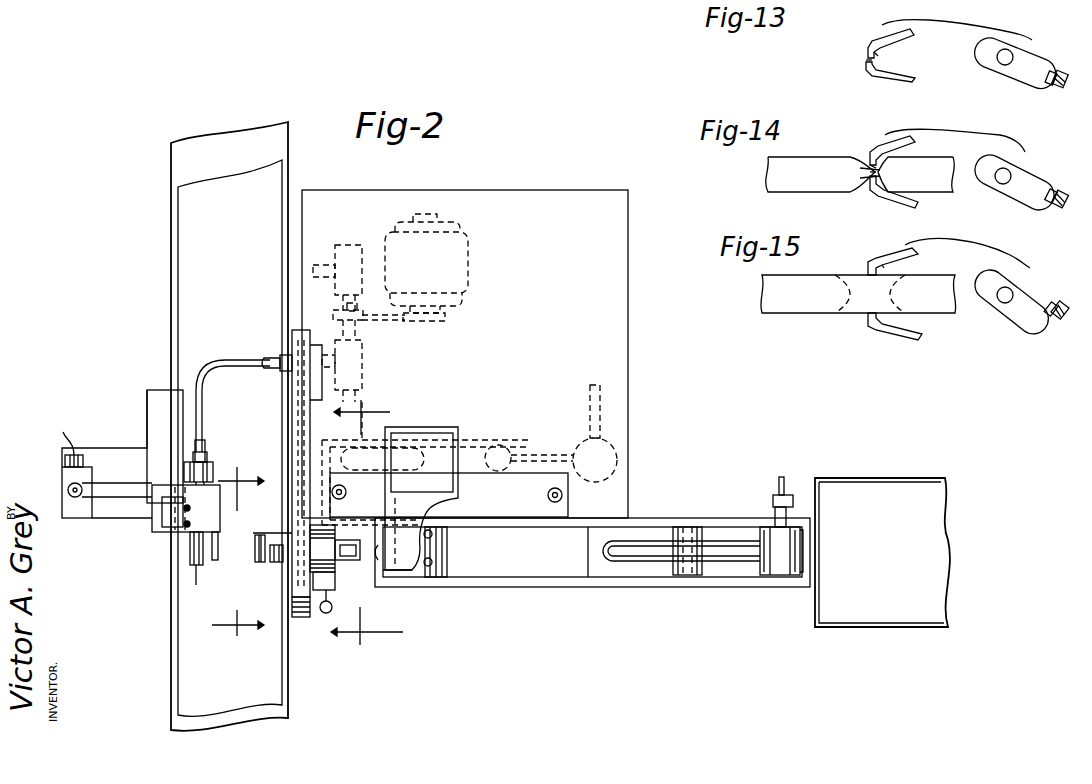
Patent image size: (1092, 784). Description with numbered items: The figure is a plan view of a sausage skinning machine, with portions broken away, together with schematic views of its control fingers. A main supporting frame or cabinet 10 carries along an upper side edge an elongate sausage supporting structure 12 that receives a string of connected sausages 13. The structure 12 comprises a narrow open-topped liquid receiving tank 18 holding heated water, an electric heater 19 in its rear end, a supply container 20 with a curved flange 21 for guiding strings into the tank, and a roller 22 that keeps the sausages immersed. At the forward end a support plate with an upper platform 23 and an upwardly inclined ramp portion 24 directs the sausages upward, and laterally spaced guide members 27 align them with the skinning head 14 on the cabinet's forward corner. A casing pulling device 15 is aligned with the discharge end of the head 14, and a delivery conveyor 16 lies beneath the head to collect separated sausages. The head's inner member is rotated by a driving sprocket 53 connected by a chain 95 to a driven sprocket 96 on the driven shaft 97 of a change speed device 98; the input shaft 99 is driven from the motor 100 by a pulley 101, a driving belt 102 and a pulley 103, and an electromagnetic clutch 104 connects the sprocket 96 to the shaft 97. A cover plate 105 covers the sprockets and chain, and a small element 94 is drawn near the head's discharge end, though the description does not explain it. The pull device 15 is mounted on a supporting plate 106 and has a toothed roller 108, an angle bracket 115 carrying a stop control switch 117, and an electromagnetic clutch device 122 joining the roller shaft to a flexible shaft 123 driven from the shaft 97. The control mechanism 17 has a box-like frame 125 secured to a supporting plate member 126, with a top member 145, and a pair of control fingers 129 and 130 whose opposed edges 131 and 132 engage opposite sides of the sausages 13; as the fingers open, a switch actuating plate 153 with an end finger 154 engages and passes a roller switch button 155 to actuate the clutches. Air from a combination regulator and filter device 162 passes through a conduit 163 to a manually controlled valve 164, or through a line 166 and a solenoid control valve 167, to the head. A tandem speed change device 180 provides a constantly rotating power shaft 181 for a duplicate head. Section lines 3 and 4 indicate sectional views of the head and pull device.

In FIG. 2, the main supporting frame or cabinet 10 is at (622, 316).
In FIG. 2, the sausage supporting structure 12 is at (618, 588).
In FIG. 14, the sausages 13 is at (765, 180).
In FIG. 15, the sausages 13 is at (772, 312).
In FIG. 2, the sausage skinning device or head 14 is at (335, 572).
In FIG. 2, the casing pulling or feeding device 15 is at (160, 532).
In FIG. 2, the delivery conveyor 16 is at (180, 250).
In FIG. 2, the control mechanism 17 is at (405, 427).
In FIG. 2, the liquid receiving tank 18 is at (718, 578).
In FIG. 2, the electric heater 19 is at (762, 540).
In FIG. 2, the supply container 20 is at (845, 618).
In FIG. 2, the curved flange 21 is at (776, 570).
In FIG. 2, the roller 22 is at (690, 527).
In FIG. 2, the upper platform 23 is at (420, 578).
In FIG. 2, the upwardly inclined ramp portion 24 is at (525, 583).
In FIG. 2, the guide members 27 is at (432, 560).
In FIG. 2, the driving sprocket 53 is at (296, 582).
In FIG. 2, the bracket 94 is at (258, 570).
In FIG. 2, the chain 95 is at (296, 430).
In FIG. 2, the driven sprocket 96 is at (282, 356).
In FIG. 2, the driven shaft 97 is at (323, 354).
In FIG. 2, the change speed device 98 is at (364, 360).
In FIG. 2, the input shaft 99 is at (352, 322).
In FIG. 2, the motor 100 is at (470, 247).
In FIG. 2, the pulley 101 is at (357, 308).
In FIG. 2, the driving belt 102 is at (392, 322).
In FIG. 2, the pulley 103 is at (447, 323).
In FIG. 2, the electromagnetic clutch 104 is at (338, 392).
In FIG. 2, the cover plate 105 is at (296, 620).
In FIG. 2, the supporting plate 106 is at (100, 518).
In FIG. 2, the roller 108 is at (196, 588).
In FIG. 2, the angle bracket 115 is at (140, 483).
In FIG. 2, the stop control switch 117 is at (62, 471).
In FIG. 2, the electromagnetic clutch device 122 is at (232, 455).
In FIG. 2, the flexible shaft 123 is at (238, 360).
In FIG. 2, the box-like case or frame 125 is at (447, 427).
In FIG. 2, the supporting bar or plate member 126 is at (565, 500).
In FIG. 13, the control finger 129 is at (878, 40).
In FIG. 14, the control finger 129 is at (878, 148).
In FIG. 15, the control finger 129 is at (870, 260).
In FIG. 13, the control finger 130 is at (880, 78).
In FIG. 14, the control finger 130 is at (878, 196).
In FIG. 15, the control finger 130 is at (878, 330).
In FIG. 13, the edge 131 is at (866, 72).
In FIG. 14, the edge 131 is at (866, 184).
In FIG. 15, the edge 131 is at (868, 318).
In FIG. 13, the edge 132 is at (866, 52).
In FIG. 14, the edge 132 is at (868, 165).
In FIG. 15, the edge 132 is at (890, 268).
In FIG. 2, the top member 145 is at (450, 480).
In FIG. 13, the switch actuating plate 153 is at (1020, 53).
In FIG. 14, the switch actuating plate 153 is at (1020, 170).
In FIG. 15, the switch actuating plate 153 is at (1005, 312).
In FIG. 13, the end finger 154 is at (1068, 62).
In FIG. 14, the end finger 154 is at (1050, 202).
In FIG. 15, the end finger 154 is at (1052, 320).
In FIG. 13, the roller switch button 155 is at (1052, 84).
In FIG. 14, the roller switch button 155 is at (1060, 208).
In FIG. 15, the roller switch button 155 is at (1062, 308).
In FIG. 2, the combination regulator and filter device 162 is at (620, 440).
In FIG. 2, the conduit 163 is at (480, 440).
In FIG. 2, the manually controlled valve 164 is at (341, 604).
In FIG. 2, the line 166 is at (345, 440).
In FIG. 2, the solenoid control valve 167 is at (515, 452).
In FIG. 2, the speed change device 180 is at (357, 250).
In FIG. 2, the power shaft 181 is at (316, 264).
In FIG. 2, the section line 3- 3 is at (367, 525).
In FIG. 2, the section line 4- 4 is at (238, 558).